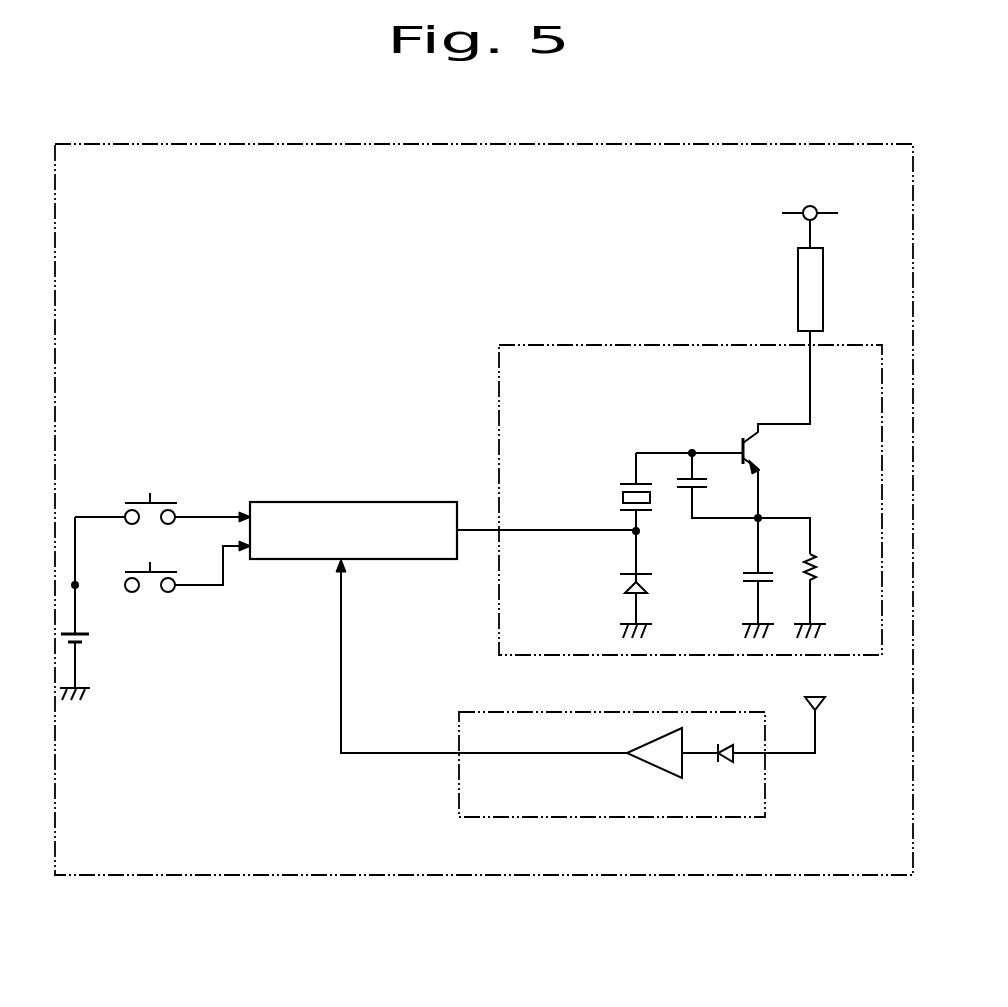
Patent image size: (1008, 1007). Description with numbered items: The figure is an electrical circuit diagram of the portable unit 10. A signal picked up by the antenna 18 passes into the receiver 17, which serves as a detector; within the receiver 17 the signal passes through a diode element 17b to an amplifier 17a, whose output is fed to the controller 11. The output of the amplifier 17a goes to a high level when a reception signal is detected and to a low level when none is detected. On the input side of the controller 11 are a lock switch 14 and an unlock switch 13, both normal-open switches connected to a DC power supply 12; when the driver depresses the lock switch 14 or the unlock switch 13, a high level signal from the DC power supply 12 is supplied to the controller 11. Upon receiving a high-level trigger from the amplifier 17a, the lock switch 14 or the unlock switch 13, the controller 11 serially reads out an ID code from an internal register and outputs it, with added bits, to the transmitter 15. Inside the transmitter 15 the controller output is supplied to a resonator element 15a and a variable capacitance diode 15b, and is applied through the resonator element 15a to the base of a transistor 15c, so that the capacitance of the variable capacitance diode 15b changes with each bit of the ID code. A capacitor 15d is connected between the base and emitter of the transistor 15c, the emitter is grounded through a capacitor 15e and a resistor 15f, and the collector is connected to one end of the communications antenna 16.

The portable unit 10 is at (663, 144).
The controller 11 is at (425, 502).
The DC power supply 12 is at (86, 638).
The unlock switch 13 is at (155, 571).
The lock switch 14 is at (155, 502).
The transmitter 15 is at (725, 345).
The resonator element 15a is at (626, 484).
The variable capacitance diode 15b is at (623, 574).
The transistor 15c is at (741, 444).
The capacitor 15d is at (705, 485).
The capacitor 15e is at (748, 573).
The resistor 15f is at (815, 578).
The communications antenna 16 is at (821, 290).
The receiver 17 is at (482, 712).
The amplifier 17a is at (666, 771).
The diode 17b is at (729, 764).
The antenna 18 is at (828, 702).